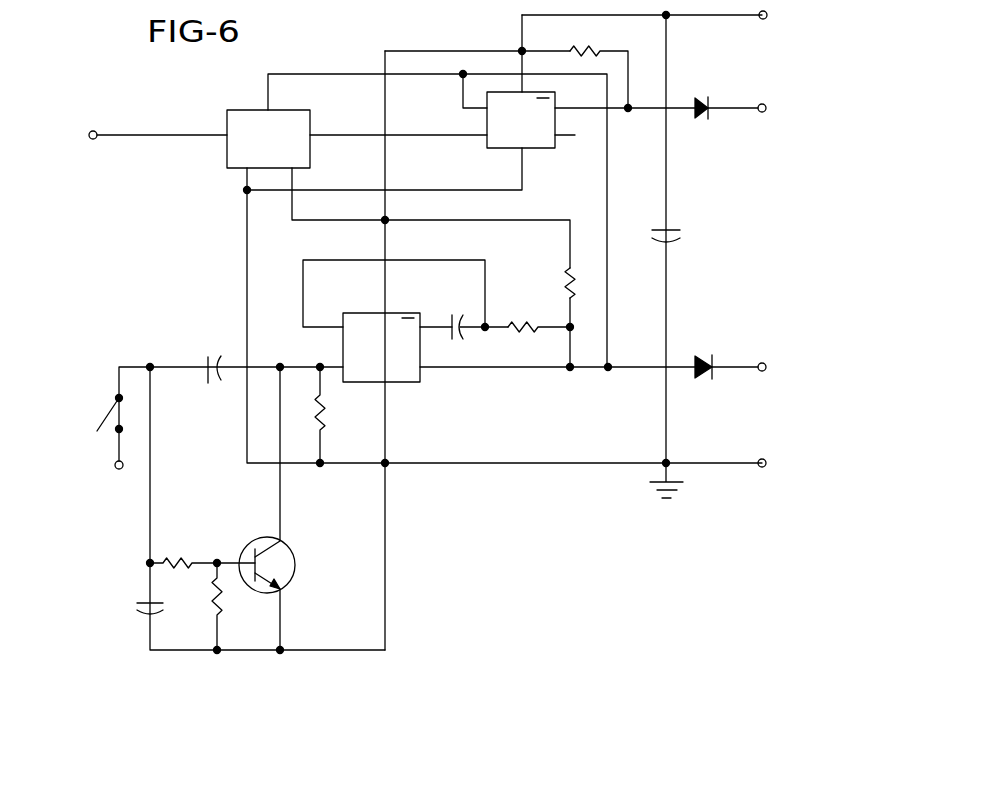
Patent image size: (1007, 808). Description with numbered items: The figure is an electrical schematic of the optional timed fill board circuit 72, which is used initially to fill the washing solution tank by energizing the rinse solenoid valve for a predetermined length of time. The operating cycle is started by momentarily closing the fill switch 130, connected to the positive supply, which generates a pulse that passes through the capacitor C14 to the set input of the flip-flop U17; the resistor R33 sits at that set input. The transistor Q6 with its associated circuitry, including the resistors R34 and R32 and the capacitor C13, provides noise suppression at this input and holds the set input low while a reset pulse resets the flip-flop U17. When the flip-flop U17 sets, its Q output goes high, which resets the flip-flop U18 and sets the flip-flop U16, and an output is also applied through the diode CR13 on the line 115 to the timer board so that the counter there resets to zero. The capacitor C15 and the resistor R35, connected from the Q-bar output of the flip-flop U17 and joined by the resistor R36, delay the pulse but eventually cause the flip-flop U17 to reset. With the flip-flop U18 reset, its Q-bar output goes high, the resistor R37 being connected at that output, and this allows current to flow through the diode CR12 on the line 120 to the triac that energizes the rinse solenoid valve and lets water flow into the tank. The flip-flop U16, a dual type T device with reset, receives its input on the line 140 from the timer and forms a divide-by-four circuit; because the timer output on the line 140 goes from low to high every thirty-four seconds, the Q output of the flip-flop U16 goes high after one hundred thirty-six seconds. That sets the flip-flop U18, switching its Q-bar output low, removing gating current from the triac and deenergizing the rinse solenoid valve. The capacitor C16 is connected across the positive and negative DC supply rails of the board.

The timing circuit 72 is at (193, 257).
The line 140 is at (195, 138).
The line 120 is at (738, 110).
The line 115 is at (736, 370).
The fill switch 130 is at (108, 407).
The flip-flop U16 is at (245, 117).
The flip-flop U17 is at (380, 344).
The flip-flop U18 is at (532, 130).
The resistor R32 is at (238, 606).
The resistor R33 is at (342, 415).
The resistor R34 is at (202, 546).
The resistor R35 is at (536, 313).
The resistor R36 is at (547, 276).
The resistor R37 is at (599, 64).
The capacitor C13 is at (125, 610).
The capacitor C14 is at (211, 354).
The capacitor C15 is at (458, 341).
The capacitor C16 is at (688, 236).
The diode CR12 is at (705, 89).
The diode CR13 is at (707, 351).
The transistor Q6 is at (295, 563).